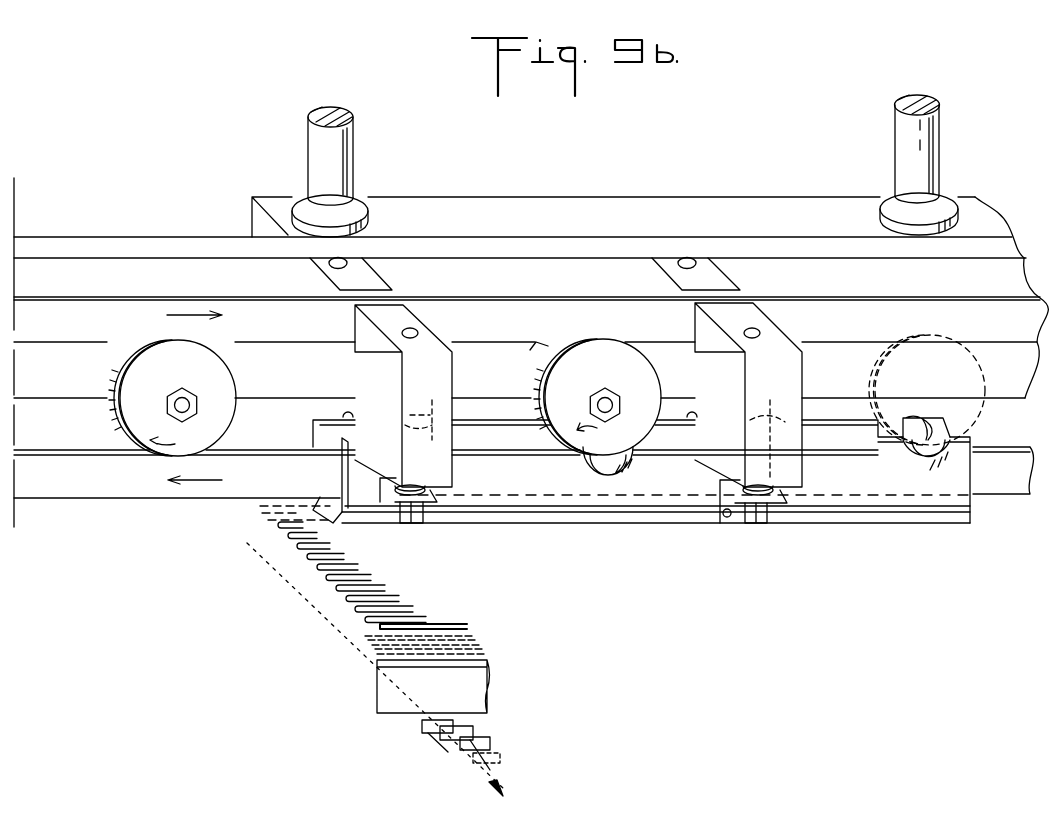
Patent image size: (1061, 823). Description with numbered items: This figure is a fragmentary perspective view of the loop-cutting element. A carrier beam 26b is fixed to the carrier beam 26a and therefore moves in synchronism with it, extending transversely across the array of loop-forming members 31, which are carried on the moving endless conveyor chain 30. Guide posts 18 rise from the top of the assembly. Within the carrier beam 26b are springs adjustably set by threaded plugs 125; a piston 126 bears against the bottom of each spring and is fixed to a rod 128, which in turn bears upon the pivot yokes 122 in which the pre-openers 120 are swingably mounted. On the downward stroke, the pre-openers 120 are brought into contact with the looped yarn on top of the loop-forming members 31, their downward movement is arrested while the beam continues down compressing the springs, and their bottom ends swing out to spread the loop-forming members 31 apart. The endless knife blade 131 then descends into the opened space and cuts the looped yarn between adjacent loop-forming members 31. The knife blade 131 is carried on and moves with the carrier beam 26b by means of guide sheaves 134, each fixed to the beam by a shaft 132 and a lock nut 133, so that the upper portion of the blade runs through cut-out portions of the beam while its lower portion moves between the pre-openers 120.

The guide post 18 is at (345, 148).
The carrier beam 26a is at (453, 205).
The carrier beam 26b is at (103, 245).
The threaded plug 125 is at (683, 267).
The knife blade 131 is at (120, 302).
The pre-opener 120 is at (305, 432).
The rod 128 is at (805, 498).
The piston 126 is at (578, 413).
The pivot yoke 122 is at (413, 525).
The guide sheave 134 is at (118, 425).
The shaft 132 is at (530, 350).
The lock nut 133 is at (190, 372).
The loop-forming member 31 is at (458, 625).
The endless conveyor chain 30 is at (485, 745).